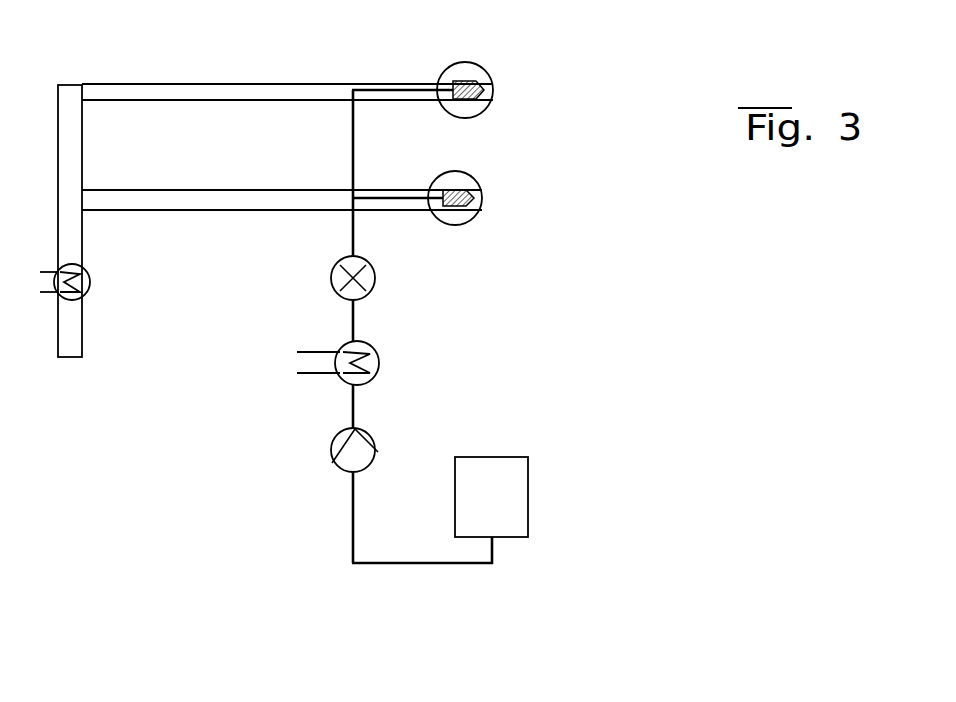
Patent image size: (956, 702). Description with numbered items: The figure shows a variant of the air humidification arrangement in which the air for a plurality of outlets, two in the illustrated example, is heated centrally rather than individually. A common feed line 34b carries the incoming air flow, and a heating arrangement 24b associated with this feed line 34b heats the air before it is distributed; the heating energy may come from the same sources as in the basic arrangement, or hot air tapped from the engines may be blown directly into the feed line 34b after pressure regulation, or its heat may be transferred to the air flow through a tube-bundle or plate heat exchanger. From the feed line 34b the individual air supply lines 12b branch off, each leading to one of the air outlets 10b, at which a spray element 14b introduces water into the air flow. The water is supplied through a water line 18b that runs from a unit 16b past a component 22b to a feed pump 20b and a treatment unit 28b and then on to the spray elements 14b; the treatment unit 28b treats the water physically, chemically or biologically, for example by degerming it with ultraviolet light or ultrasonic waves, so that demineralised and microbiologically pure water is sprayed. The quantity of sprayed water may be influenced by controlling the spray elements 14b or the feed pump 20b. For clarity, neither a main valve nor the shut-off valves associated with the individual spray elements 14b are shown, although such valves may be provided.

The air outlet 10b is at (462, 72).
The air supply line 12b is at (258, 90).
The spray element 14b is at (479, 90).
The reservoir / control unit 16b is at (530, 497).
The water line 18b is at (357, 337).
The feed pump 20b is at (375, 452).
The heat exchanger 22b is at (380, 363).
The heating arrangement 24b is at (90, 284).
The treatment unit 28b is at (377, 280).
The feed line 34b is at (86, 152).